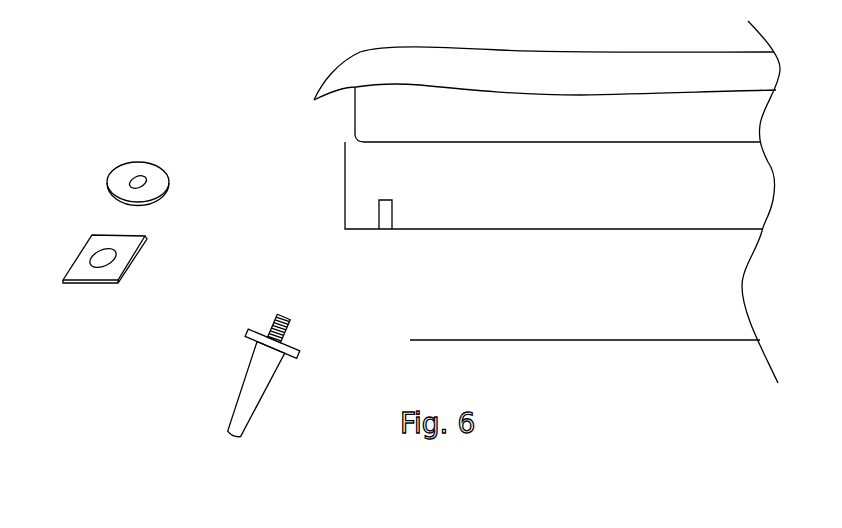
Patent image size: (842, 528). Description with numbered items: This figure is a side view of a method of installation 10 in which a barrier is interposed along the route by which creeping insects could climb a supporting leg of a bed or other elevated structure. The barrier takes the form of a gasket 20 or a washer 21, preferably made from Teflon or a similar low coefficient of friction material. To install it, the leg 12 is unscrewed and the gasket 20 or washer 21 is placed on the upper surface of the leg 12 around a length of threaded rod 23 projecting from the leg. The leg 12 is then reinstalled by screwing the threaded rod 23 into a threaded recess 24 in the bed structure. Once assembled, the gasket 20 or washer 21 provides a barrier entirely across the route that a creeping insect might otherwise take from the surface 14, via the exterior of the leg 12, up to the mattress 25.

The mounting assembly 10 is at (157, 332).
The leg 12 is at (264, 376).
The surface 14 is at (602, 341).
The gasket 20 is at (72, 259).
The washer 21 is at (113, 166).
The threaded rod 23 is at (178, 202).
The threaded recess 24 is at (392, 214).
The mattress 25 is at (367, 115).